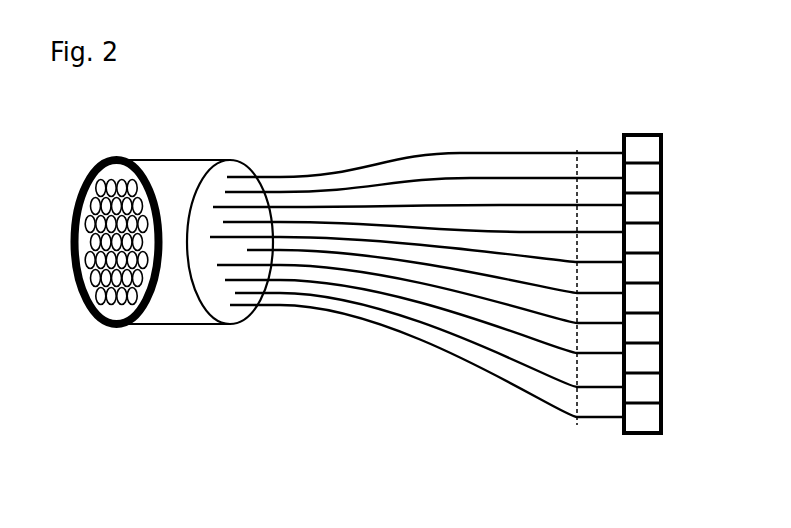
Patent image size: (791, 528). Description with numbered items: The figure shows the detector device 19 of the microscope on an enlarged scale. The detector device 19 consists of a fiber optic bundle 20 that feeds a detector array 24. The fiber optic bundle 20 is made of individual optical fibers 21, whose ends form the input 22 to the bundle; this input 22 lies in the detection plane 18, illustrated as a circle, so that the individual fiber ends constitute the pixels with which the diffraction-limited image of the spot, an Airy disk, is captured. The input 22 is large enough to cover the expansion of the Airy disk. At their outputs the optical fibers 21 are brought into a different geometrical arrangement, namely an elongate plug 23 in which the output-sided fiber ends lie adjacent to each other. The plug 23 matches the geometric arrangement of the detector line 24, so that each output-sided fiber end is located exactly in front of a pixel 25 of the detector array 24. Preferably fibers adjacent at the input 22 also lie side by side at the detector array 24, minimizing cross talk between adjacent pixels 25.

The detection plane 18 is at (118, 330).
The detector device 19 is at (364, 116).
The fiber optic bundle 20 is at (183, 173).
The optical fibers 21 is at (280, 173).
The input to the fiber optic bundle 22 is at (75, 210).
The plug 23 is at (562, 155).
The detector array 24 is at (637, 131).
The pixel 25 is at (642, 420).